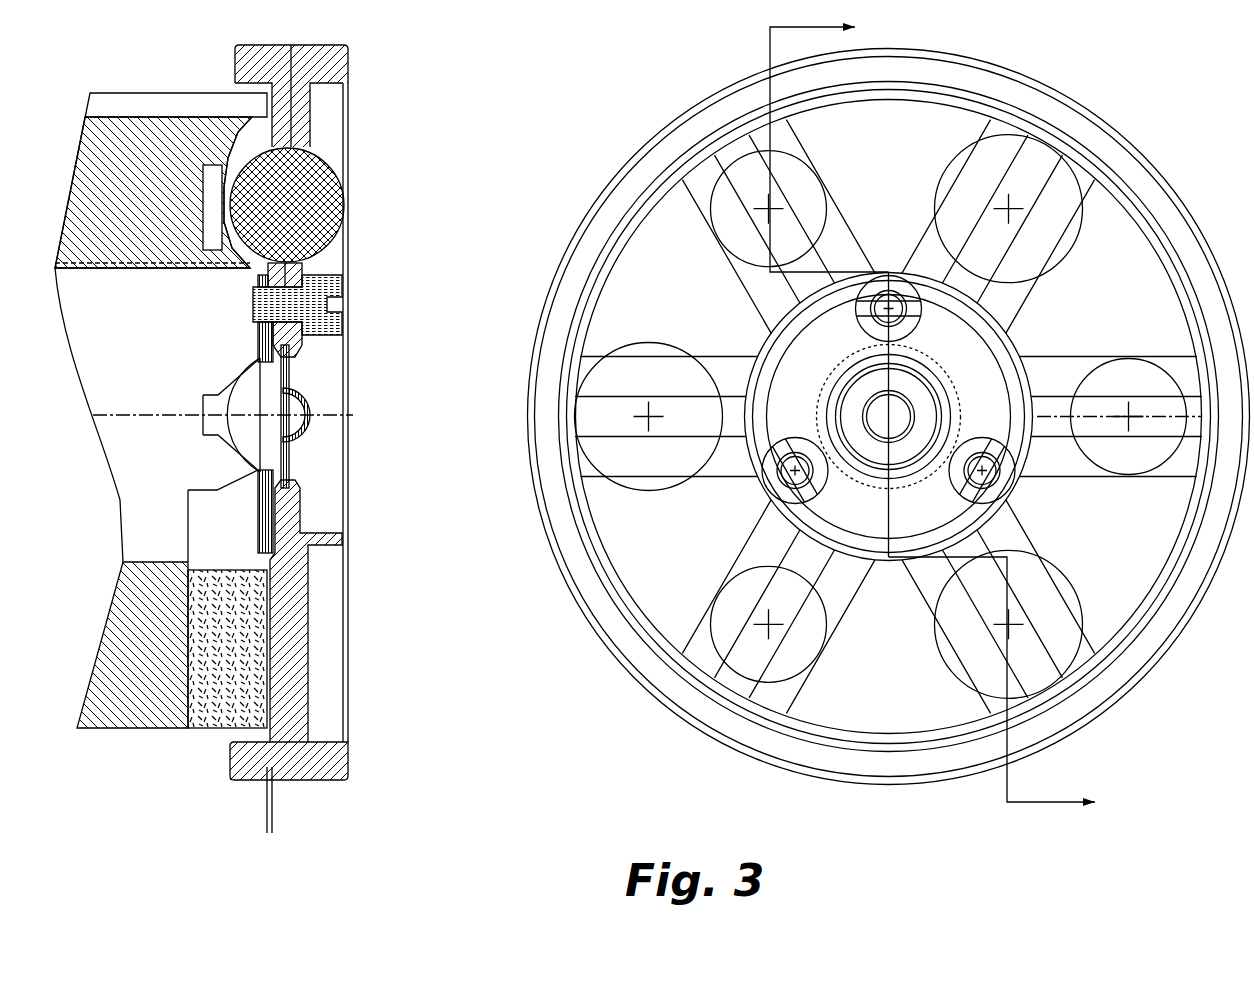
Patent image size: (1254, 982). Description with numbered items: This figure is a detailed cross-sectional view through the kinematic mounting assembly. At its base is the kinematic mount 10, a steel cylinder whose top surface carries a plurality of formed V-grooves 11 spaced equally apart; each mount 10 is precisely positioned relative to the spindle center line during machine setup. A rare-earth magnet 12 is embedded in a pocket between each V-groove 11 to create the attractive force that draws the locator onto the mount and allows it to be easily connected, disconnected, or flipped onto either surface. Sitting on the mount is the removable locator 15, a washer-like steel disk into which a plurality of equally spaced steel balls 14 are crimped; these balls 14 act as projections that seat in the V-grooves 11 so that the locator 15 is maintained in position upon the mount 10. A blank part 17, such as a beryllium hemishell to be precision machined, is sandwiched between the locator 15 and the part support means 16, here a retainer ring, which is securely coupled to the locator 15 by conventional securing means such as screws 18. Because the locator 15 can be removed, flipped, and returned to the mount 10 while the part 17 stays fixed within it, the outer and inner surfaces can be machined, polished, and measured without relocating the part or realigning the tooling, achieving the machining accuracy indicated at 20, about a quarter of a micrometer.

The kinematic mount 10 is at (146, 106).
The V-groove 11 is at (223, 381).
The rare-earth magnet 12 is at (199, 735).
The steel ball 14 is at (327, 181).
The removable locator 15 is at (338, 54).
The part support means 16 is at (269, 519).
The blank part 17 is at (313, 436).
The screws 18 is at (340, 276).
The machining accuracy 20 is at (228, 827).